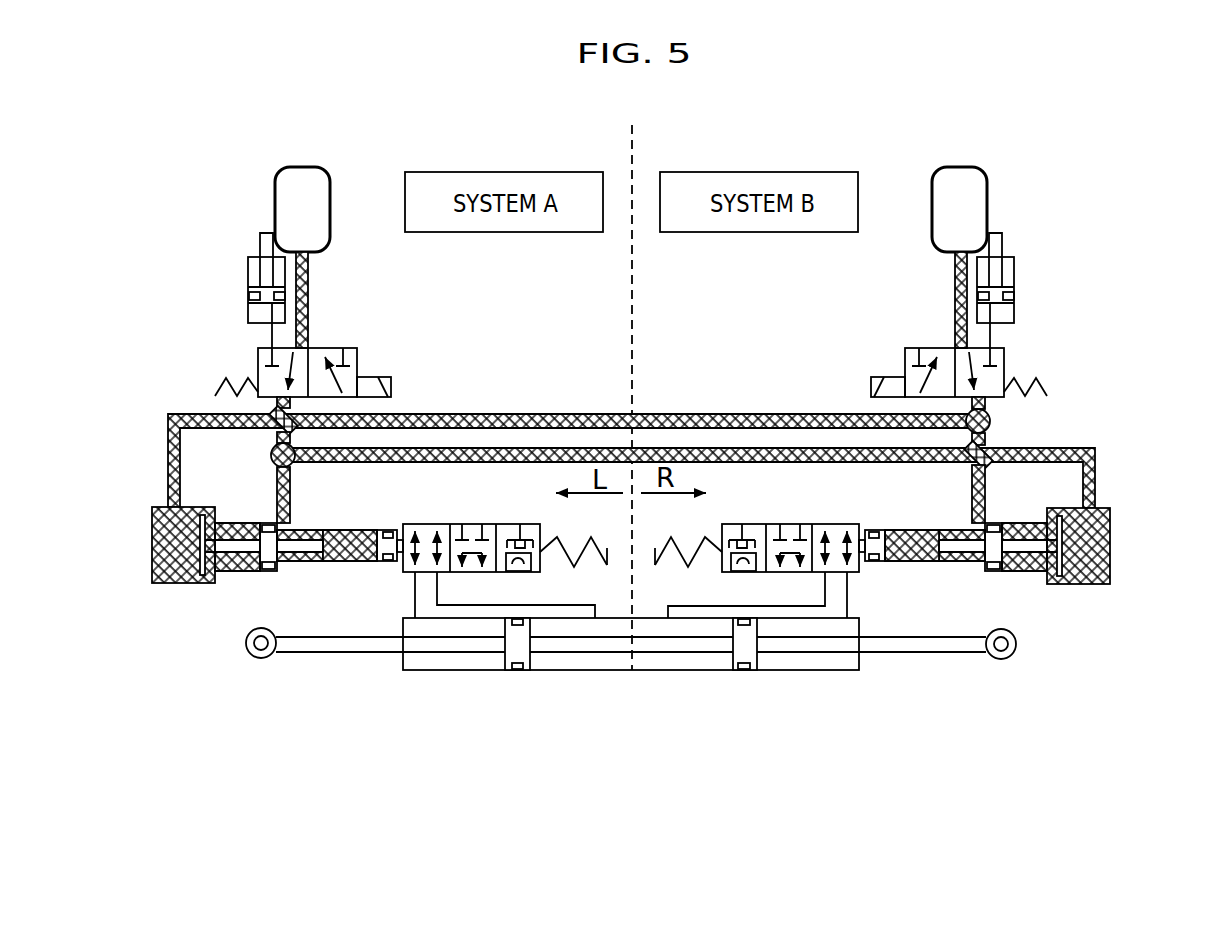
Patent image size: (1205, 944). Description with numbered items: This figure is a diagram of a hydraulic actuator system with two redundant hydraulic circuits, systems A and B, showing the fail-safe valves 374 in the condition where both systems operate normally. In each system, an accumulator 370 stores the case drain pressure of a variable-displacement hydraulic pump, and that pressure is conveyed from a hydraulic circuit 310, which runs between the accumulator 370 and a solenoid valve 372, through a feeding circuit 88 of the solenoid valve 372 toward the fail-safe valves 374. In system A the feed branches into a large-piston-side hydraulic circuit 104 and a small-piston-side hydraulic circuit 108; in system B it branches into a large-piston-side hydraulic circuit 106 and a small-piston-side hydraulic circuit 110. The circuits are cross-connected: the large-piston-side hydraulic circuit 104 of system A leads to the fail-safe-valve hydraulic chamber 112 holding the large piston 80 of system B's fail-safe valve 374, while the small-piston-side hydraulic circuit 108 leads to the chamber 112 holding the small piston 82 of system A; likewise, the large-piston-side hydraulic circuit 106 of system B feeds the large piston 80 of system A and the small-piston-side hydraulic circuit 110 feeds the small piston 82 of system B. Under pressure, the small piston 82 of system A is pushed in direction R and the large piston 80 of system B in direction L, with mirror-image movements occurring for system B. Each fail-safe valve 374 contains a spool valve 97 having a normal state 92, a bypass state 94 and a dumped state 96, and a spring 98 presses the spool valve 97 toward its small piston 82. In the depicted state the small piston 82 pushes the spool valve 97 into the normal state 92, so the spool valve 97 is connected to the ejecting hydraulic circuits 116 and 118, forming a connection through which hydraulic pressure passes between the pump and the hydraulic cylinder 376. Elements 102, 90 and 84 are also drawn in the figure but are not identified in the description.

The accumulator 370 is at (303, 166).
The hydraulic circuit 310 is at (309, 270).
The pilot cylinder 102 is at (270, 337).
The feeding circuit 88 is at (290, 360).
The valve port 90 is at (348, 347).
The solenoid valve 372 is at (178, 356).
The large-piston-side hydraulic circuit 106 is at (647, 414).
The large-piston-side hydraulic circuit 104 is at (1095, 475).
The small-piston-side hydraulic circuit 108 is at (290, 498).
The small-piston-side hydraulic circuit 110 is at (973, 498).
The fail-safe-valve hydraulic chamber 112 is at (262, 523).
The small piston 82 is at (378, 543).
The large piston 80 is at (192, 557).
The fail-safe valve 374 is at (238, 600).
The normal state 92 is at (425, 522).
The bypass state 94 is at (475, 522).
The dumped state 96 is at (520, 522).
The spool valve 97 is at (548, 531).
The spring 98 is at (607, 548).
The ejecting hydraulic circuit 116 is at (413, 595).
The ejecting hydraulic circuit 118 is at (438, 588).
The actuator rod 84 is at (298, 652).
The hydraulic cylinder 376 is at (390, 702).